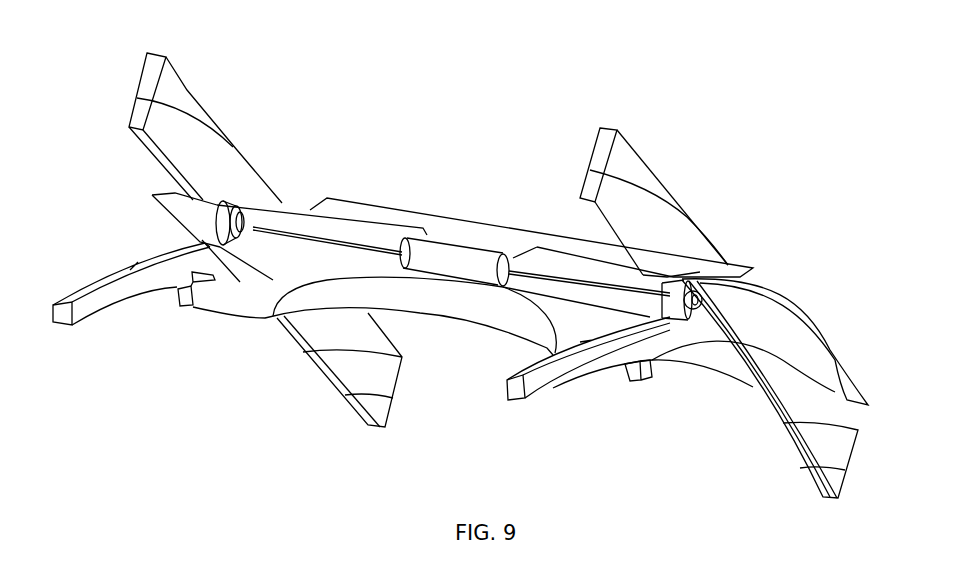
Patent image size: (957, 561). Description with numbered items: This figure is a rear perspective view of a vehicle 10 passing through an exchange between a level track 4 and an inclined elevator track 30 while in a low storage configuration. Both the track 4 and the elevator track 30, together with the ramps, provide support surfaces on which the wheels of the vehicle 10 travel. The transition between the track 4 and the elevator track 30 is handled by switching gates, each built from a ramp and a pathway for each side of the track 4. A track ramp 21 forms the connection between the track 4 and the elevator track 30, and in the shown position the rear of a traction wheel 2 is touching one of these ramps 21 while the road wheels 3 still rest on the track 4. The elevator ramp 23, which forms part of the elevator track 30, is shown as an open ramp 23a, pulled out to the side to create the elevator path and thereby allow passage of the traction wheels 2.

The vehicle 10 is at (491, 222).
The traction wheel 2 is at (257, 203).
The elevator ramp 23 is at (625, 155).
The open ramp 23a is at (168, 201).
The track ramp 21 is at (728, 376).
The inclined elevator track 30 is at (768, 394).
The level track 4 is at (510, 395).
The road wheel 3 is at (173, 305).